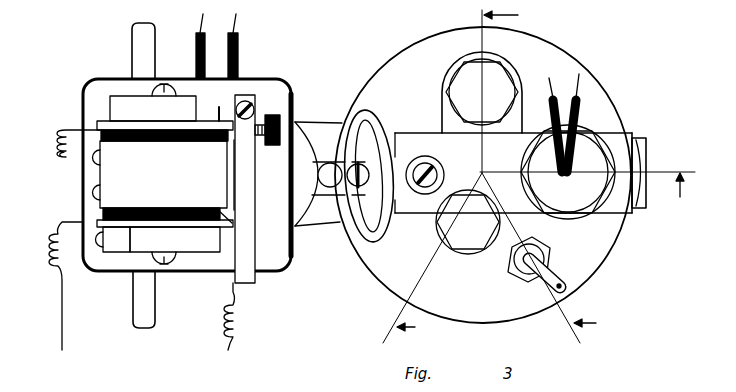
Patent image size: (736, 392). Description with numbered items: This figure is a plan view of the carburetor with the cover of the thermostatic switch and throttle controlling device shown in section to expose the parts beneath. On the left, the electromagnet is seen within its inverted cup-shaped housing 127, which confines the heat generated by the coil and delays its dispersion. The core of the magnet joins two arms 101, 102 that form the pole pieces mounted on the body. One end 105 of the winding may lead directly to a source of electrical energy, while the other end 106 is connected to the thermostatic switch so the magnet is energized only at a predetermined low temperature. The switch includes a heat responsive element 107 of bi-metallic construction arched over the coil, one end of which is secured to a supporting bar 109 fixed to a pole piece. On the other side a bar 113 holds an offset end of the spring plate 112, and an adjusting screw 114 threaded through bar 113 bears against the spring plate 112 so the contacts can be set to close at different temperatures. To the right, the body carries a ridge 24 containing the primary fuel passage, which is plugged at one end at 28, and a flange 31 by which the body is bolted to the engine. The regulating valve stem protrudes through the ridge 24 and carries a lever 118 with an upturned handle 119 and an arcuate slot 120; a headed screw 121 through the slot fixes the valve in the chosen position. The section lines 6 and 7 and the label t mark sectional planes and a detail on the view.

The arm 101 is at (118, 100).
The arm 102 is at (190, 245).
The end of winding 105 is at (62, 304).
The end of winding 106 is at (72, 130).
The heat responsive element 107 is at (118, 172).
The supporting bar 109 is at (118, 243).
The spring plate 112 is at (218, 115).
The bar 113 is at (253, 108).
The adjusting screw 114 is at (278, 146).
The lever 118 is at (437, 168).
The upturned handle 119 is at (322, 163).
The arcuate slot 120 is at (378, 130).
The headed screw 121 is at (363, 174).
The housing 127 is at (278, 80).
The ridge 24 is at (413, 148).
The plug 28 is at (641, 153).
The flange 31 is at (140, 315).
The toggle t is at (552, 272).
The section line 6- 6 is at (539, 257).
The section line 7- 7 is at (546, 175).